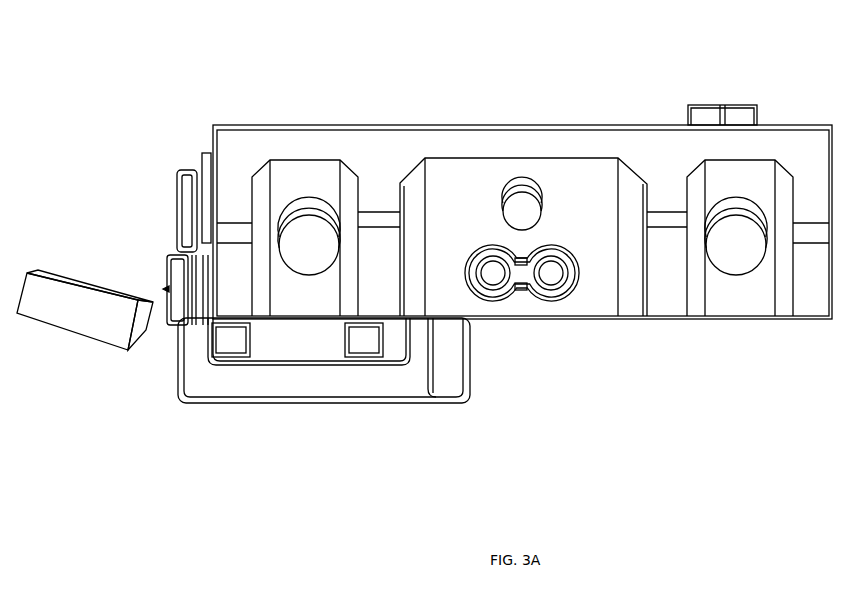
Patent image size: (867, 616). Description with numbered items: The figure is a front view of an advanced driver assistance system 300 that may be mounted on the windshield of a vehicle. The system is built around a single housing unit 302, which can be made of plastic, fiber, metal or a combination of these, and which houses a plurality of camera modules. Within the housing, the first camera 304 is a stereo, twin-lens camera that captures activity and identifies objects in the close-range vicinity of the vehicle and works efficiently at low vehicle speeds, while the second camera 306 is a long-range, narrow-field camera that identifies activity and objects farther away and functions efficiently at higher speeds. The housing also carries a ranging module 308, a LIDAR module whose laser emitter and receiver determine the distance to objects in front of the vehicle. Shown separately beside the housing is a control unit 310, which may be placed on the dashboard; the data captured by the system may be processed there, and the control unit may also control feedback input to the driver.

The advanced driver assistance system 300 is at (186, 33).
The single housing unit 302 is at (368, 123).
The first camera 304 is at (295, 270).
The second camera 306 is at (500, 197).
The ranging module 308 is at (509, 304).
The control unit 310 is at (83, 281).